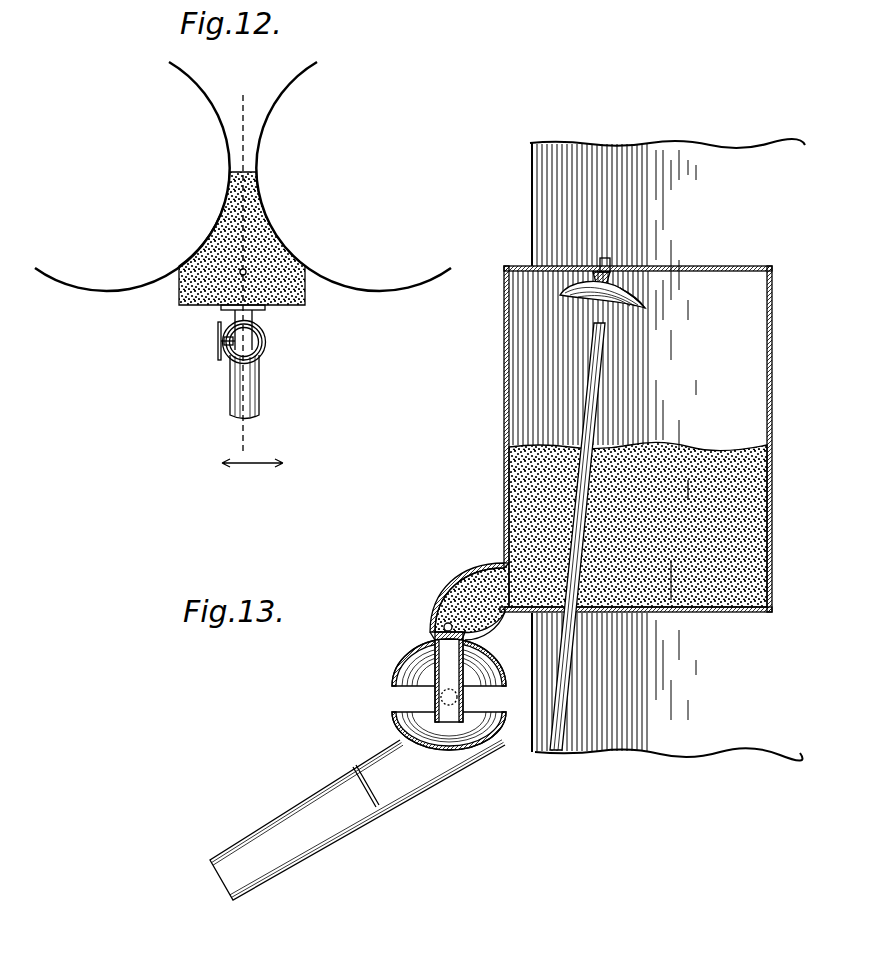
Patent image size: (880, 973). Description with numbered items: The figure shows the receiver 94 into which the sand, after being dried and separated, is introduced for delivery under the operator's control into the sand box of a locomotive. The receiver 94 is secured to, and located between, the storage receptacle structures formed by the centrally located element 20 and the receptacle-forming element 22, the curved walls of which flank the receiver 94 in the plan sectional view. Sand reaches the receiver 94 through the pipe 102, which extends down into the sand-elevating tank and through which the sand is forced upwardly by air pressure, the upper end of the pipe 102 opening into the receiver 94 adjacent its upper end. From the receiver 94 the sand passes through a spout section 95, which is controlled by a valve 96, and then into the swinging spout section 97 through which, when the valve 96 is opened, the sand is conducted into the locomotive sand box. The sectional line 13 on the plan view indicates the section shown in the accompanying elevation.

In FIG. 12, the centrally located element 20 is at (353, 176).
In FIG. 12, the receptacle-forming element 22 is at (132, 176).
In FIG. 13, the receptacle-forming element 22 is at (659, 450).
In FIG. 12, the receiver 94 is at (222, 258).
In FIG. 13, the receiver 94 is at (504, 411).
In FIG. 12, the spout section 95 is at (254, 318).
In FIG. 13, the spout section 95 is at (462, 578).
In FIG. 13, the valve 96 is at (470, 640).
In FIG. 12, the swinging spout section 97 is at (261, 387).
In FIG. 13, the swinging spout section 97 is at (343, 792).
In FIG. 12, the pipe 102 is at (247, 270).
In FIG. 13, the pipe 102 is at (600, 392).
In FIG. 12, the section line of Fig. 13 is at (252, 475).